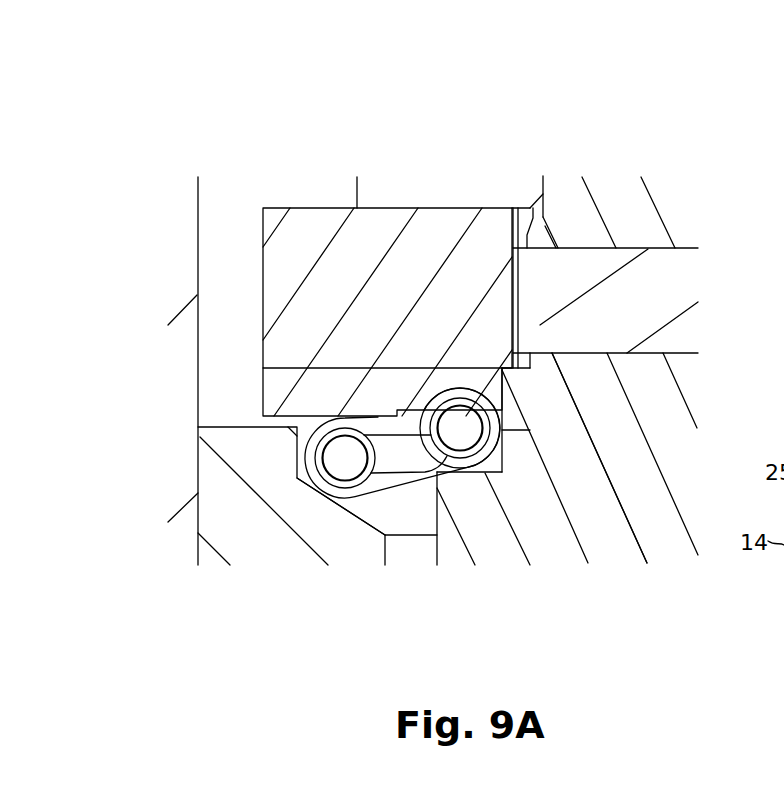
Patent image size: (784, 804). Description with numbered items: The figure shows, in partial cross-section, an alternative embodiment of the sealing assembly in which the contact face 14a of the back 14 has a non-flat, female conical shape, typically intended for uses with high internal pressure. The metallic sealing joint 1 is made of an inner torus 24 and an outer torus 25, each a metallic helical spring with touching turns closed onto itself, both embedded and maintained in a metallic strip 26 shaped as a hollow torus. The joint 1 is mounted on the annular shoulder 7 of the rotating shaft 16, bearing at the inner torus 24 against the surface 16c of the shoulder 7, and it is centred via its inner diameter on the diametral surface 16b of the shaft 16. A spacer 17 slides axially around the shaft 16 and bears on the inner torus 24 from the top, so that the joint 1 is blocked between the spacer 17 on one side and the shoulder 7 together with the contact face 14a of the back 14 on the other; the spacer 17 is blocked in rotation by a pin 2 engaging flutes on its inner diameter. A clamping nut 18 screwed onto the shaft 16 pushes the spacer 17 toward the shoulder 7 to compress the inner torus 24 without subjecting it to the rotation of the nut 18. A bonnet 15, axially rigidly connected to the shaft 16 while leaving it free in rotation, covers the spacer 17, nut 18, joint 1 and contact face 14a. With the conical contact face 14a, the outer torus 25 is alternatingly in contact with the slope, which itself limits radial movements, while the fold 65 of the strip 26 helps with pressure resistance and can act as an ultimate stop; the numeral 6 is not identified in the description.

The bonnet 15 is at (190, 243).
The spacer 17 is at (333, 283).
The clamping nut 18 is at (450, 190).
The inner torus 24 is at (458, 410).
The metallic sealing joint 1 is at (474, 378).
The rotating shaft 16 is at (625, 198).
The pin 2 is at (645, 300).
The diametral surface 16b is at (580, 418).
The metallic strip 26 is at (324, 417).
The outer torus 25 is at (310, 437).
The back 14 is at (240, 520).
The fold 65 is at (287, 460).
The contact face 14a is at (363, 513).
The surface of the shoulder 16c is at (480, 475).
The annular shoulder 7 is at (585, 497).
The adjacent section 6 is at (777, 432).